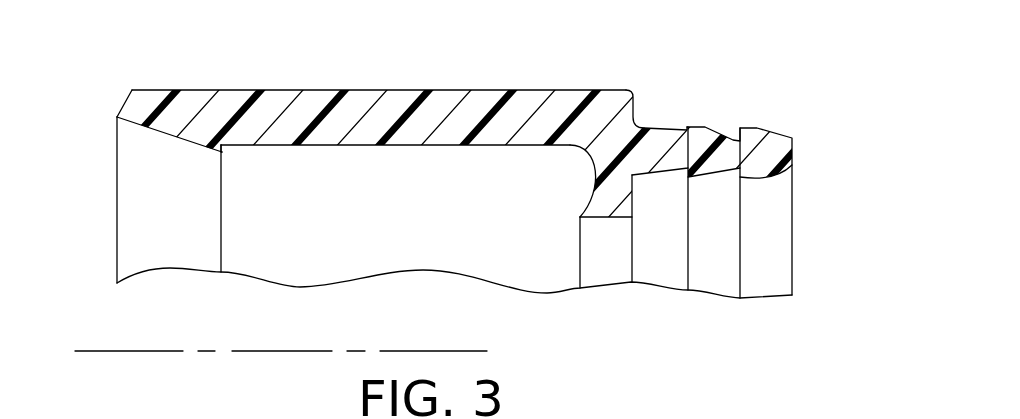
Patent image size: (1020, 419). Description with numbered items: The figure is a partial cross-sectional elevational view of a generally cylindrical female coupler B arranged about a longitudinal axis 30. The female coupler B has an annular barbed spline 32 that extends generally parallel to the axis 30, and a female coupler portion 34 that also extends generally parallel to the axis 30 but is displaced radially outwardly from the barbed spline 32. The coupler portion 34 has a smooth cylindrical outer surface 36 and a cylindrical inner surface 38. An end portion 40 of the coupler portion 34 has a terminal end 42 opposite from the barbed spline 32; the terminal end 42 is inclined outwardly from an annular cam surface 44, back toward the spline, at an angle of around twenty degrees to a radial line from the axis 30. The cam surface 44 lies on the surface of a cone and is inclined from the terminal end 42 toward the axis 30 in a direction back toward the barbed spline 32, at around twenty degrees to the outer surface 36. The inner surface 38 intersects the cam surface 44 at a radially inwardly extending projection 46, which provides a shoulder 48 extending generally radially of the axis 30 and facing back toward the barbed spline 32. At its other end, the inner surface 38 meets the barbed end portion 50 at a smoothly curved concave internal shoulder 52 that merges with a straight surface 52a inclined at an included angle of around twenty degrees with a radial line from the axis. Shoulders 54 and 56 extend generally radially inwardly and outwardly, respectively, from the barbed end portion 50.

The longitudinal axis 30 is at (147, 351).
The annular barbed spline 32 is at (775, 145).
The female coupler portion 34 is at (362, 103).
The cylindrical outer surface 36 is at (327, 88).
The cylindrical inner surface 38 is at (432, 146).
The end portion 40 is at (148, 102).
The terminal end 42 is at (119, 108).
The annular cam surface 44 is at (160, 133).
The radially inwardly extending projection 46 is at (218, 154).
The shoulder 48 is at (223, 148).
The barbed end portion 50 is at (648, 155).
The concave internal shoulder 52 is at (587, 162).
The straight surface 52a is at (578, 199).
The shoulder 54 is at (633, 202).
The shoulder 56 is at (633, 95).
The female coupler B is at (468, 88).